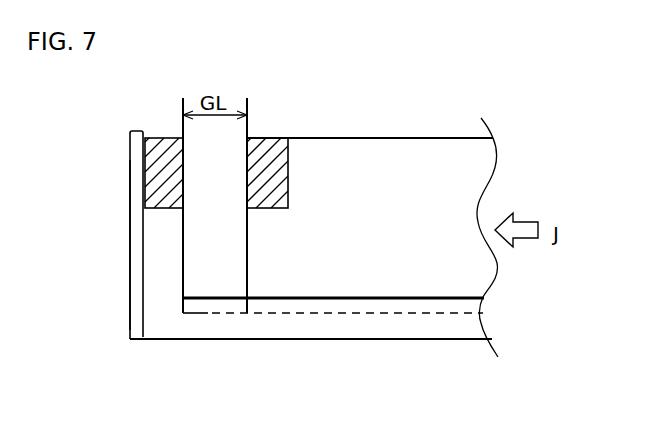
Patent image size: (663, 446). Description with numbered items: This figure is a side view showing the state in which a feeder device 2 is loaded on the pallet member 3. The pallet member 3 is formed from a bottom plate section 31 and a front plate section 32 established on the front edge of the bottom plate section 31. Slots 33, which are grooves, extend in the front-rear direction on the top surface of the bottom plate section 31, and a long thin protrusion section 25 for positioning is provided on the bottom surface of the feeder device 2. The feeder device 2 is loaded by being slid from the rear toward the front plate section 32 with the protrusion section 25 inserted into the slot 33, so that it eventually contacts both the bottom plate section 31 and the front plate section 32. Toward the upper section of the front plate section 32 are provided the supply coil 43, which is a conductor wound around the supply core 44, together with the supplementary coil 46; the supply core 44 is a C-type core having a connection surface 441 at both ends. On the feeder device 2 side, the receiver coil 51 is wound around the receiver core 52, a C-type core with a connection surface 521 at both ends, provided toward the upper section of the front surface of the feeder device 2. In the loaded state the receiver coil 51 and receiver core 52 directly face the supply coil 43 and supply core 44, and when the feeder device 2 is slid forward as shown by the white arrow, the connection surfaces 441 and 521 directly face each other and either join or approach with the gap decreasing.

The feeder device 2 is at (408, 165).
The pallet member 3 is at (122, 164).
The protrusion section 25 is at (330, 305).
The bottom plate section 31 is at (220, 325).
The front plate section 32 is at (158, 247).
The slot 33 is at (200, 307).
The supply coil 43 is at (106, 137).
The supply core 44 is at (164, 173).
The supplementary coil 46 is at (157, 140).
The receiver coil 51 is at (283, 133).
The receiver core 52 is at (266, 150).
The connection surface 441 is at (187, 172).
The connection surface 521 is at (243, 181).